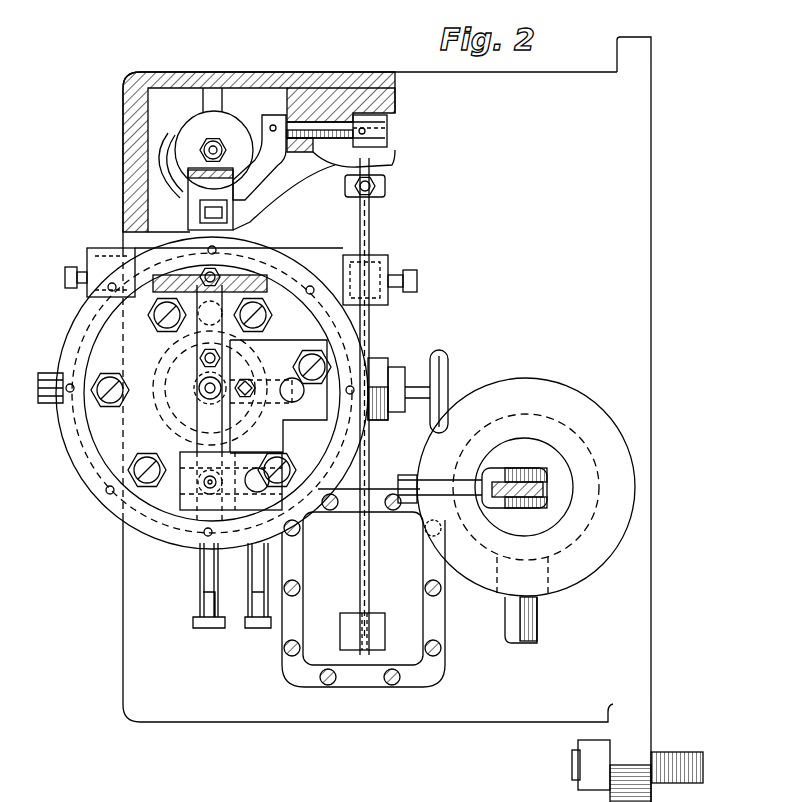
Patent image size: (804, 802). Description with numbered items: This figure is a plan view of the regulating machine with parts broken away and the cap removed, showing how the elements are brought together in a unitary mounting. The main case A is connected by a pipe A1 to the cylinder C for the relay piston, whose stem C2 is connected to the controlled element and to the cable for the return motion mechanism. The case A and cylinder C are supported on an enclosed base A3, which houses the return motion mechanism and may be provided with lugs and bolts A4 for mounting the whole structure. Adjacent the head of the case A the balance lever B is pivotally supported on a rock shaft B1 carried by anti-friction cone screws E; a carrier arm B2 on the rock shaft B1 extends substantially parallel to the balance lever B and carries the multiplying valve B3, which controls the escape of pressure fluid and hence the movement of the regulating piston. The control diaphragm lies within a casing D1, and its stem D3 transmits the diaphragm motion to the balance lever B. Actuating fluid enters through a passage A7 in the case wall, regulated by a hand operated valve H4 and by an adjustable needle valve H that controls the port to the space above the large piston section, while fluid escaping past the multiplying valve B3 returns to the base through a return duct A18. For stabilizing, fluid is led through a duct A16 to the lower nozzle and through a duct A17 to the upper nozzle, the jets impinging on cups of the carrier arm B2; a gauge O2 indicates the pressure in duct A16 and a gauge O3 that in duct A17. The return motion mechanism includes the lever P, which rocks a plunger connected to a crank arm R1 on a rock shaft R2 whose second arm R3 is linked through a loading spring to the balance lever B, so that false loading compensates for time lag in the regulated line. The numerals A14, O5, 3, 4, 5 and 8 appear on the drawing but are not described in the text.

The main case A is at (148, 340).
The pipe A1 is at (52, 385).
The enclosed base A3 is at (123, 162).
The bolt A4 is at (693, 752).
The passage A7 is at (258, 398).
The block A14 is at (345, 100).
The duct A16 is at (207, 490).
The duct A17 is at (303, 514).
The return duct A18 is at (266, 318).
The balance lever B is at (369, 546).
The rock shaft B1 is at (322, 272).
The carrier arm B2 is at (205, 420).
The multiplying valve B3 is at (210, 373).
The cylinder C is at (577, 436).
The stem C2 is at (522, 468).
The casing D1 is at (410, 624).
The stem D3 is at (369, 584).
The anti-friction cone screws E is at (78, 267).
The adjustable needle valve H is at (250, 397).
The hand operated valve H4 is at (410, 387).
The gauge O2 is at (213, 628).
The gauge O3 is at (208, 145).
The ring O5 is at (228, 128).
The lever P is at (178, 183).
The crank arm R1 is at (270, 163).
The rock shaft R2 is at (310, 122).
The second arm R3 is at (385, 135).
The section line 3 is at (215, 30).
The section line 4 is at (32, 404).
The section line 5 is at (176, 491).
The section line 8 is at (46, 284).